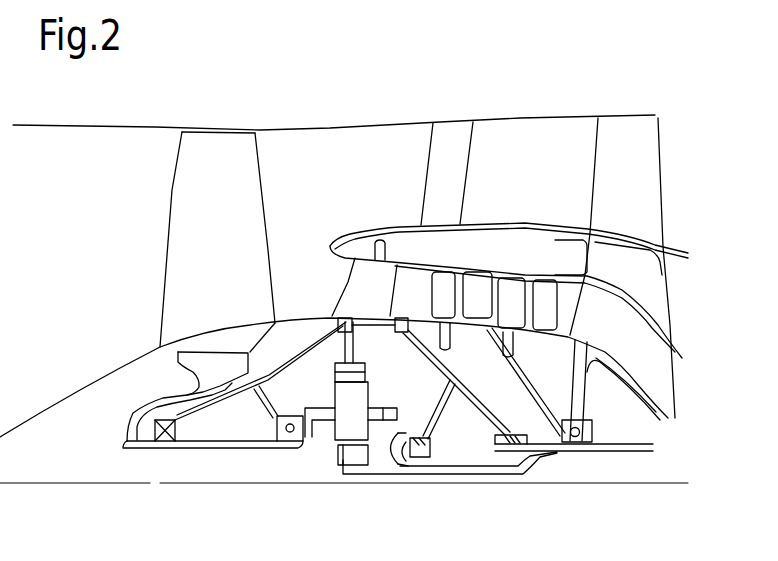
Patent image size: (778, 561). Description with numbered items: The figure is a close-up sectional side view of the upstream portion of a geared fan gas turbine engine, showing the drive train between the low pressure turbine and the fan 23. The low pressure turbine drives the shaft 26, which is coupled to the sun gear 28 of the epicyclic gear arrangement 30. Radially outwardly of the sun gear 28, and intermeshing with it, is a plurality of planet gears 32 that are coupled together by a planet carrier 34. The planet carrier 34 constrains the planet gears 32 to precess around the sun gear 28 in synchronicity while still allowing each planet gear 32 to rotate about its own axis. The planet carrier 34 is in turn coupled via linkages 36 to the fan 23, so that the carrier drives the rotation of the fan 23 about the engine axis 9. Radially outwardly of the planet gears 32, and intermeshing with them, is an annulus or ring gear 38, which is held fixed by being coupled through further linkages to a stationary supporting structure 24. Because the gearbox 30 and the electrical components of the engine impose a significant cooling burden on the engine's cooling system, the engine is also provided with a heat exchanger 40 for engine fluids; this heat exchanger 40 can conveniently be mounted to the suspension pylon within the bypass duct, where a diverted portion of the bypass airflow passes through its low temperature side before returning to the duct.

The engine axis 9 is at (130, 485).
The fan 23 is at (190, 276).
The stationary supporting structure 24 is at (362, 290).
The shaft 26 is at (563, 452).
The sun gear 28 is at (348, 465).
The epicyclic gear arrangement 30 is at (313, 443).
The planet gears 32 is at (340, 432).
The planet carrier 34 is at (400, 458).
The linkages 36 is at (290, 449).
The ring gear 38 is at (333, 377).
The heat exchanger 40 is at (357, 337).